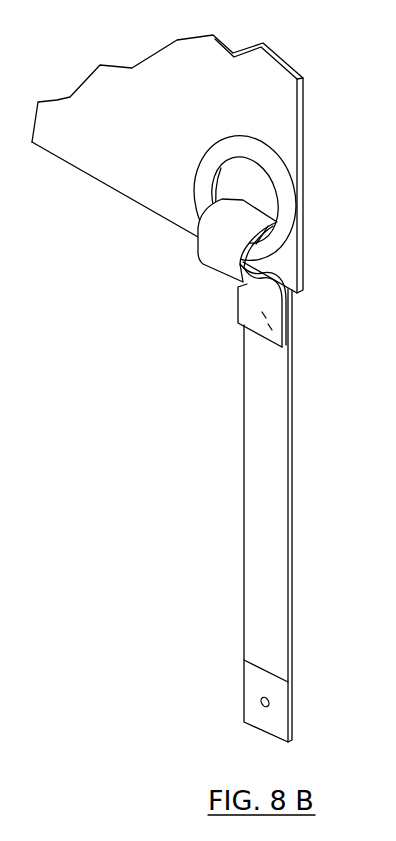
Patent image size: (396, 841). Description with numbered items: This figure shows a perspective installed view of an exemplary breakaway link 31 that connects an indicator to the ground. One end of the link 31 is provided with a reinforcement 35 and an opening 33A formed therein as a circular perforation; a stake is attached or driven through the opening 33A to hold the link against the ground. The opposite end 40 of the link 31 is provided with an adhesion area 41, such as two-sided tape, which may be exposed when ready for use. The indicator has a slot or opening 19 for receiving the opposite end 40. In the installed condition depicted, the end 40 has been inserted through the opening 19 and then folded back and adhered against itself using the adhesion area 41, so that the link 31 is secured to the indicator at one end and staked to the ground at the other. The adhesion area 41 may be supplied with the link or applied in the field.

The opening 19 is at (221, 185).
The strip 31 is at (270, 490).
The opening 33A is at (269, 707).
The reinforcement 35 is at (273, 690).
The opposite end 40 is at (217, 263).
The adhesion area 41 is at (293, 348).